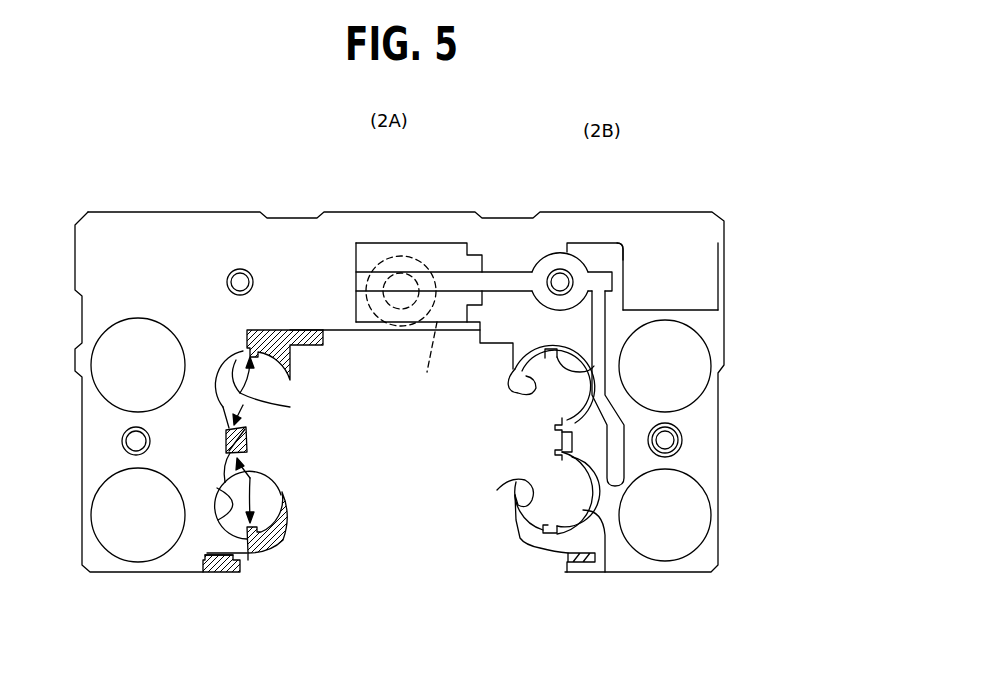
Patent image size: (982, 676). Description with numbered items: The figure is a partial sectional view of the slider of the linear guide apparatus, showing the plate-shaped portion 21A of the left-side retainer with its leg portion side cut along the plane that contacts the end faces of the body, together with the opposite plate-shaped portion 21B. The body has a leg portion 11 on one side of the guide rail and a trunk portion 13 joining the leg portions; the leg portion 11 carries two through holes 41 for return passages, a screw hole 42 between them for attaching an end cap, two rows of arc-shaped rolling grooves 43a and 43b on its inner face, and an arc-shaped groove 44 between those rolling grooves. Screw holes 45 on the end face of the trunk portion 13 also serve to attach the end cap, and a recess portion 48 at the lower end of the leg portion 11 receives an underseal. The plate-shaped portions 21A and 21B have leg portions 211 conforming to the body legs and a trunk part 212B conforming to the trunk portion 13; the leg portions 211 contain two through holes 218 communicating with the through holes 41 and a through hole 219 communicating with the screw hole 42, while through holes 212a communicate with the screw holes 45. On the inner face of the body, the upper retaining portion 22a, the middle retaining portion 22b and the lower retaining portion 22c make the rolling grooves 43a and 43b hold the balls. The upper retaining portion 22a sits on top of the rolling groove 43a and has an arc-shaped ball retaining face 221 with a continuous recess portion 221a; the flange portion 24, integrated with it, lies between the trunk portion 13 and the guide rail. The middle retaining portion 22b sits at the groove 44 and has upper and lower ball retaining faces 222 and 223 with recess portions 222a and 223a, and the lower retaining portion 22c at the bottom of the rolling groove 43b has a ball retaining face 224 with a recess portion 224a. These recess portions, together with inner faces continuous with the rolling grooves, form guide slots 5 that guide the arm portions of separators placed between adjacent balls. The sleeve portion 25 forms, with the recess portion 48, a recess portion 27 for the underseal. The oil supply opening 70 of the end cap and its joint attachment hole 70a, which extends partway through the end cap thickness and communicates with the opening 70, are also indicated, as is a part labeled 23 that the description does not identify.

The guide slot 5 is at (290, 407).
The leg portion 11 is at (102, 458).
The trunk portion 13 is at (343, 232).
The plate-shaped portion 21A is at (380, 243).
The plate-shaped portion 21B is at (567, 237).
The upper retaining portion 22a is at (283, 379).
The middle retaining portion 22b is at (247, 432).
The lower retaining portion 22c is at (288, 500).
The shaft 23 is at (447, 272).
The flange portion 24 is at (301, 328).
The sleeve portion 25 is at (223, 572).
The recess portion 27 is at (237, 557).
The through hole 41 is at (117, 328).
The screw hole 42 is at (128, 430).
The rolling groove 43a is at (233, 357).
The rolling groove 43b is at (228, 522).
The groove 44 is at (244, 445).
The screw hole 45 is at (237, 270).
The recess portion 48 is at (218, 572).
The oil supply opening 70 is at (418, 257).
The joint attachment hole 70a is at (427, 358).
The leg portion 211 is at (700, 421).
The through hole 212a is at (557, 268).
The trunk part 212B is at (617, 280).
The through hole 218 is at (694, 337).
The through hole 219 is at (682, 441).
The ball retaining face 221 is at (528, 390).
The recess portion 221a is at (600, 360).
The upper ball retaining face 222 is at (555, 428).
The recess portion 222a is at (576, 371).
The lower ball retaining face 223 is at (557, 455).
The recess portion 223a is at (592, 484).
The ball retaining face 224 is at (497, 490).
The recess portion 224a is at (606, 572).